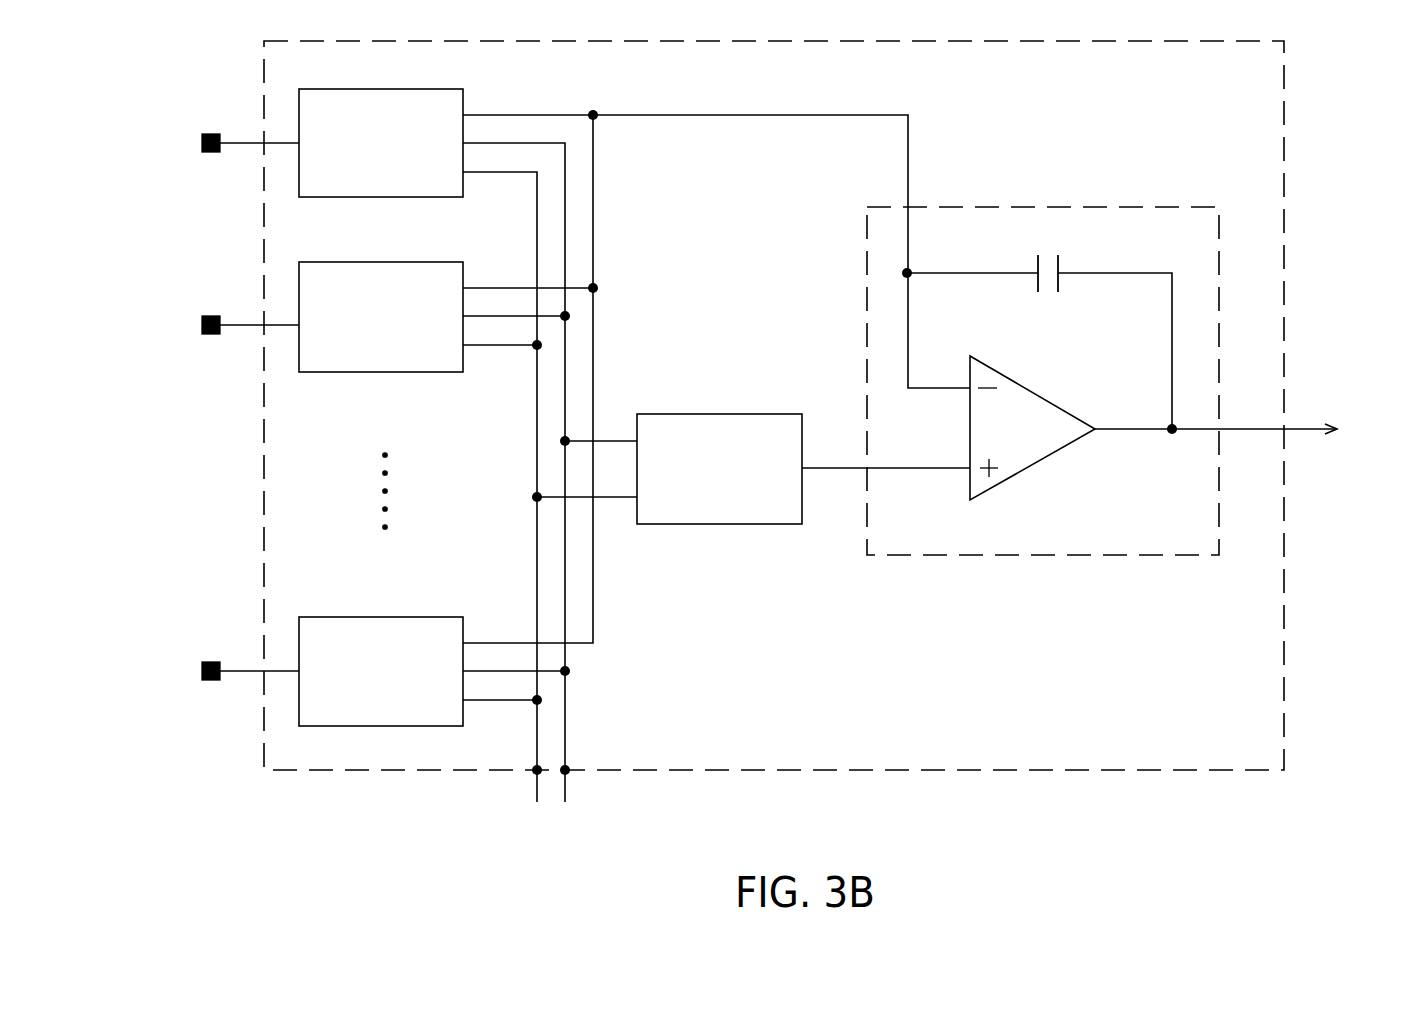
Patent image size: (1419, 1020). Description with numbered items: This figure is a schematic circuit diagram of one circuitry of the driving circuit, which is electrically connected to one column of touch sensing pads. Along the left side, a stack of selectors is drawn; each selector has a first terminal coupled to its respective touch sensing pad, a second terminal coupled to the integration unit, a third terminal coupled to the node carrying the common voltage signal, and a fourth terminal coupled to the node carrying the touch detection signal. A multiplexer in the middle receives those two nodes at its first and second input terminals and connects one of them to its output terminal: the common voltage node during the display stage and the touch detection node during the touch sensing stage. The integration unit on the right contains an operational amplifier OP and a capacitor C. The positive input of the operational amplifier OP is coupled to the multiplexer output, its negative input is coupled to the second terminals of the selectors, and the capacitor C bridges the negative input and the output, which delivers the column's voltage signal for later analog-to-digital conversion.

The capacitor C is at (1047, 293).
The operational amplifier OP is at (1025, 470).